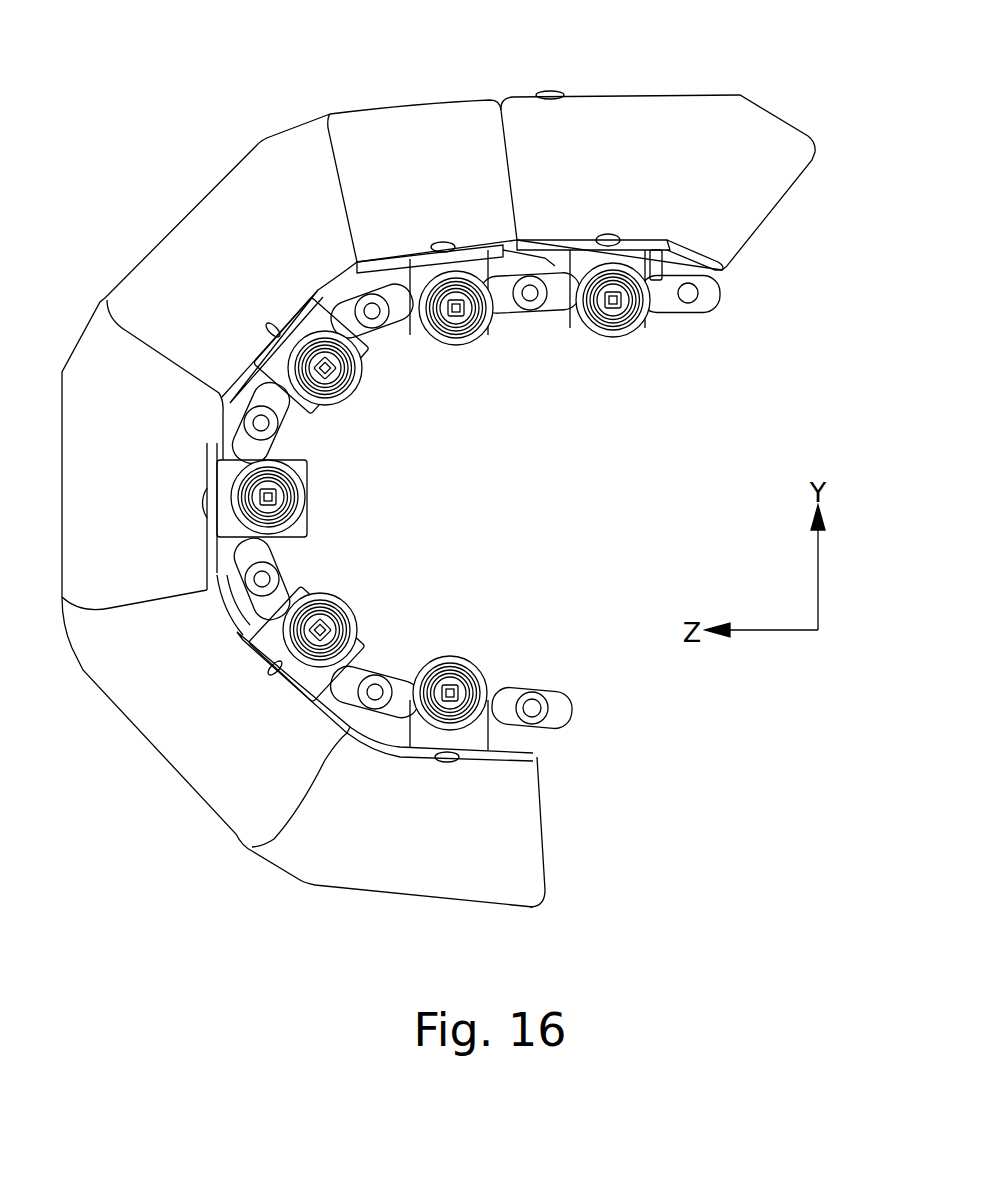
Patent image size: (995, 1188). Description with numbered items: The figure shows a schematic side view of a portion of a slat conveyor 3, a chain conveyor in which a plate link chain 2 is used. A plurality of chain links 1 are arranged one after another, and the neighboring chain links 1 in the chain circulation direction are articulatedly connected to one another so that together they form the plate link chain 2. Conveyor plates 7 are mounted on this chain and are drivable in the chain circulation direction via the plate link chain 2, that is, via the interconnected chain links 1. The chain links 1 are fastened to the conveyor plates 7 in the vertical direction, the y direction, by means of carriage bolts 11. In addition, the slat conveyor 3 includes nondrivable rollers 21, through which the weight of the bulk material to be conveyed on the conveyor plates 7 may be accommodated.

The chain link 1 is at (398, 315).
The plate link chain 2 is at (698, 325).
The slat conveyor 3 is at (802, 98).
The conveyor plate 7 is at (425, 247).
The carriage bolt 11 is at (608, 237).
The nondrivable roller 21 is at (458, 315).